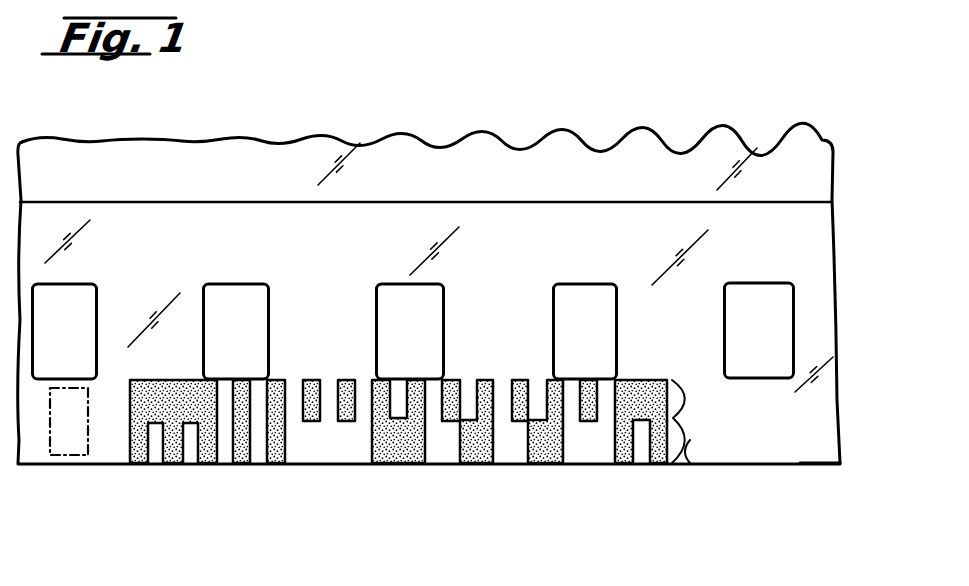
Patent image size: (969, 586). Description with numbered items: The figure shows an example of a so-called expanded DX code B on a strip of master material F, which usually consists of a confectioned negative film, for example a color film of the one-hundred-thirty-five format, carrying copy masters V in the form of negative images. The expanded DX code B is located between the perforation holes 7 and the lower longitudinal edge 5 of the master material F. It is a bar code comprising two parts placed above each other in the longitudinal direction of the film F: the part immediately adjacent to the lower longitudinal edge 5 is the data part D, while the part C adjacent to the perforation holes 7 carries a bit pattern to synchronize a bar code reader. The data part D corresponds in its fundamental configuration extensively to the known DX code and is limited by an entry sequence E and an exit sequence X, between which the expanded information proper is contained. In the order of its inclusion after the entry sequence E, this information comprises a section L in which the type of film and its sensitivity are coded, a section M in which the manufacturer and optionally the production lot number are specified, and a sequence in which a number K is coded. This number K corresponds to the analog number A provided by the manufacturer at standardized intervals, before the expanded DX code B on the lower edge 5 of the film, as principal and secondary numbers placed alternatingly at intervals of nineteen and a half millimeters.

The copy master V is at (242, 168).
The perforation holes 7 is at (257, 308).
The analog number A is at (70, 452).
The expanded DX code B is at (126, 440).
The entry sequence E is at (217, 470).
The section L is at (355, 470).
The section M is at (442, 470).
The number K is at (547, 470).
The exit sequence X is at (668, 470).
The part C is at (695, 402).
The data part D is at (695, 442).
The lower longitudinal edge 5 is at (763, 465).
The master material F is at (817, 465).